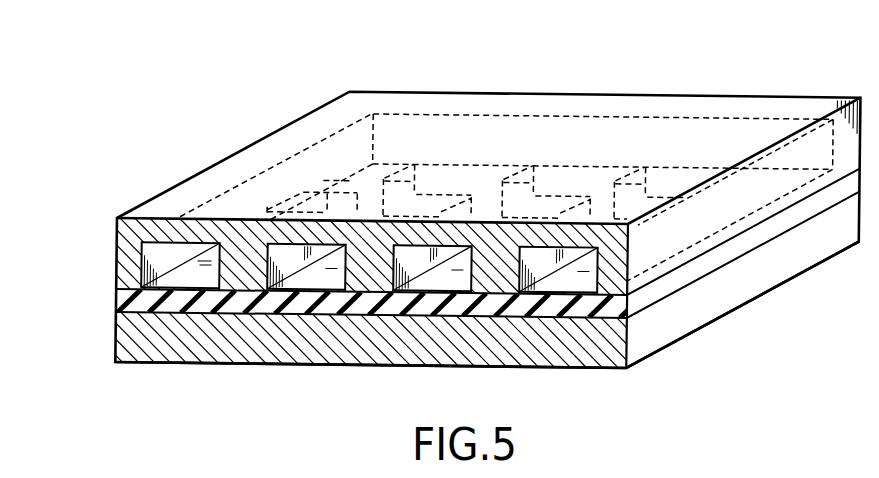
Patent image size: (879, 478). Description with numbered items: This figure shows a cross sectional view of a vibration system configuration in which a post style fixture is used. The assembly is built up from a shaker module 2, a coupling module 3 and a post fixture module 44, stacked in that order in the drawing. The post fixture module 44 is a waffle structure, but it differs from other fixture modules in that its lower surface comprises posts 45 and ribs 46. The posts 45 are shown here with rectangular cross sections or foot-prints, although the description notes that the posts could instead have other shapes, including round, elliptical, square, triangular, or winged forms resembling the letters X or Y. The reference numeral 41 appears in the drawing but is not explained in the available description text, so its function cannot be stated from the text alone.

The sensor device body 41 is at (230, 138).
The post fixture module 44 is at (470, 110).
The posts 45 is at (336, 240).
The ribs 46 is at (588, 226).
The coupling module 3 is at (136, 298).
The shaker module 2 is at (702, 298).